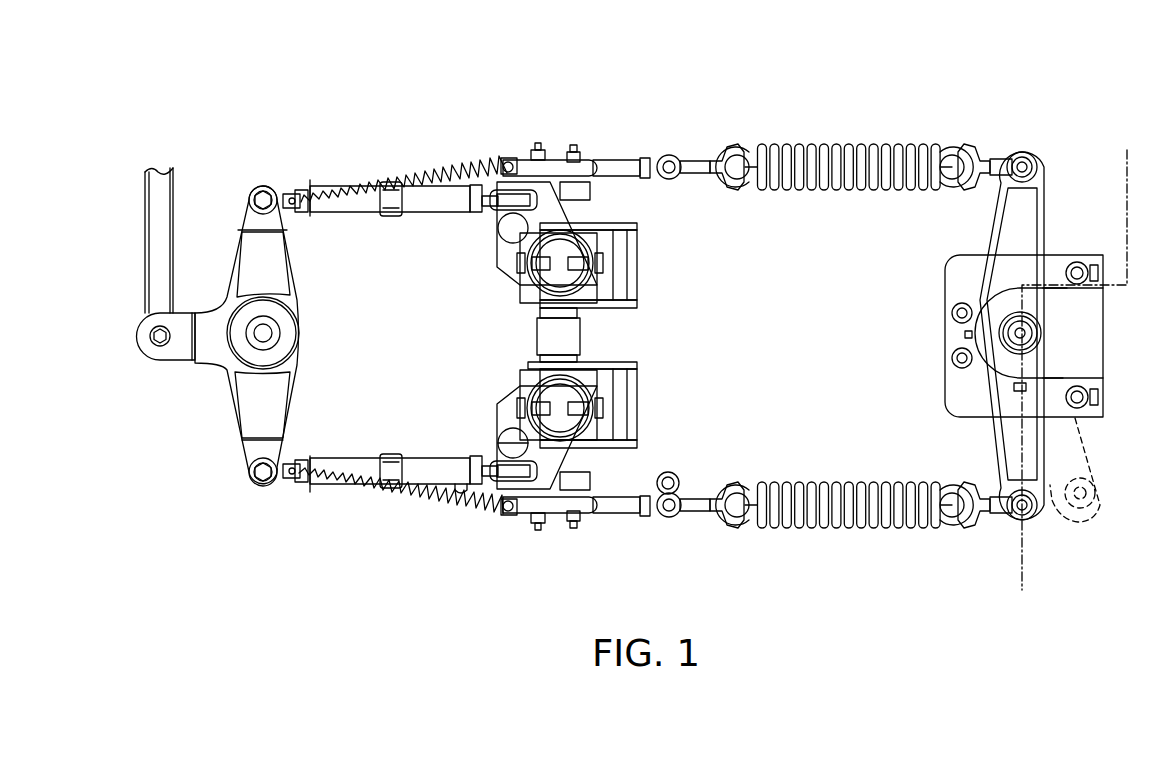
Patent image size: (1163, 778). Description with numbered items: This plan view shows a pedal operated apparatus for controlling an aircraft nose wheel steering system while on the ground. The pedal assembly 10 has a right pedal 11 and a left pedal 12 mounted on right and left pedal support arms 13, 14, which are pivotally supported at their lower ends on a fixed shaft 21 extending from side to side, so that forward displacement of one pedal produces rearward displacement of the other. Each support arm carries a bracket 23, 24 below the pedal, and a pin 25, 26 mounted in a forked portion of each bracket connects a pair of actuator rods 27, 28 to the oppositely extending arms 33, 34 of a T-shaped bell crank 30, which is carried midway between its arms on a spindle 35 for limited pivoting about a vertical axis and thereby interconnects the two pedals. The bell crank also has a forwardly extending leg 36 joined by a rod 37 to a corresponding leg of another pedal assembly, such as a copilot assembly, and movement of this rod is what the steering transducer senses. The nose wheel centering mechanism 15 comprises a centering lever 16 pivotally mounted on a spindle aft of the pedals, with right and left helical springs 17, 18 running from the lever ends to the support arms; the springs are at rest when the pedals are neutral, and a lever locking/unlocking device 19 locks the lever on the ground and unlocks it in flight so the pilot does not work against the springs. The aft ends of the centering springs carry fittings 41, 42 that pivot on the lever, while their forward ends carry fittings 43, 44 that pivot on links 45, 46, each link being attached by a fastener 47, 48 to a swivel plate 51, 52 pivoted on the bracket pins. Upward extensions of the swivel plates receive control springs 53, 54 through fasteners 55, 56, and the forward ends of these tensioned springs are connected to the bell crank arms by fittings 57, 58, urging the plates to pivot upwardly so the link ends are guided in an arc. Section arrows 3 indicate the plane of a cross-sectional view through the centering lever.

The section line 3- 3 is at (1127, 150).
The pedal assembly 10 is at (808, 82).
The right pedal 11 is at (638, 265).
The left pedal 12 is at (637, 404).
The right pedal support arm 13 is at (530, 296).
The left pedal support arm 14 is at (522, 375).
The nose wheel centering mechanism 15 is at (1115, 428).
The centering lever 16 is at (1046, 215).
The right helical spring 17 is at (850, 143).
The left helical spring 18 is at (812, 530).
The lever locking/unlocking device 19 is at (985, 385).
The fixed shaft 21 is at (580, 336).
The bracket 23 is at (500, 240).
The bracket 24 is at (500, 412).
The pin 25 is at (506, 157).
The pin 26 is at (506, 516).
The actuator rod 27 is at (436, 212).
The actuator rod 28 is at (436, 458).
The bell crank 30 is at (302, 295).
The arm 33 is at (248, 193).
The arm 34 is at (244, 472).
The spindle 35 is at (275, 336).
The forwardly extending leg 36 is at (205, 362).
The rod 37 is at (172, 195).
The fitting 41 is at (1000, 155).
The fitting 42 is at (1000, 517).
The fitting 43 is at (692, 155).
The fitting 44 is at (692, 517).
The link 45 is at (625, 158).
The link 46 is at (616, 514).
The fastener 47 is at (576, 150).
The fastener 48 is at (576, 530).
The swivel plate 51 is at (554, 160).
The swivel plate 52 is at (558, 514).
The control spring 53 is at (414, 178).
The control spring 54 is at (414, 496).
The fastener 55 is at (534, 148).
The fastener 56 is at (533, 526).
The fitting 57 is at (290, 209).
The fitting 58 is at (296, 462).